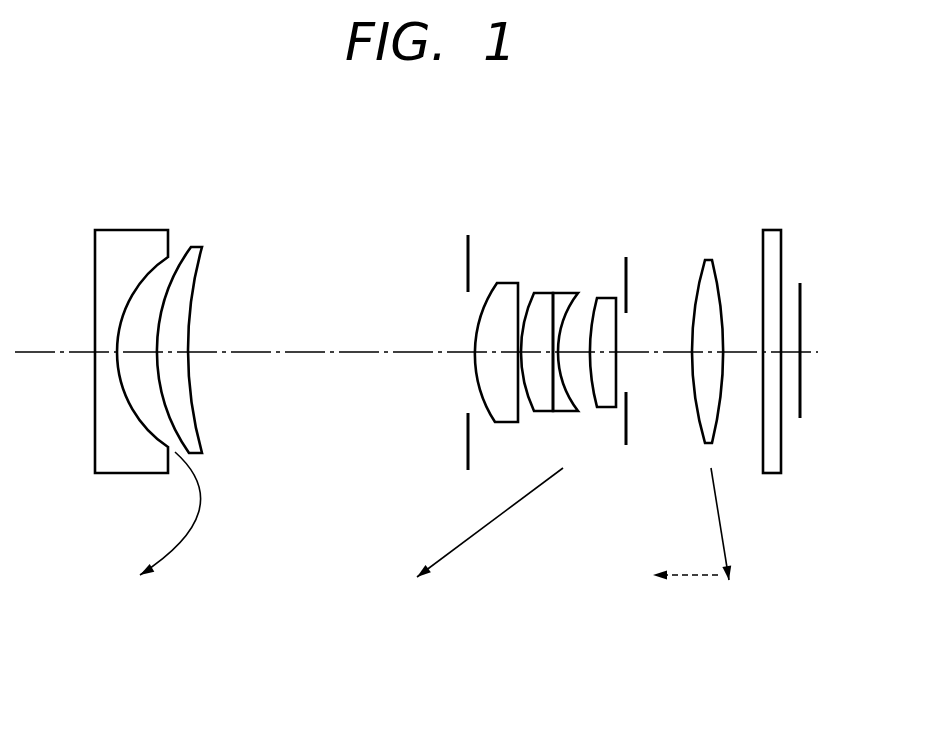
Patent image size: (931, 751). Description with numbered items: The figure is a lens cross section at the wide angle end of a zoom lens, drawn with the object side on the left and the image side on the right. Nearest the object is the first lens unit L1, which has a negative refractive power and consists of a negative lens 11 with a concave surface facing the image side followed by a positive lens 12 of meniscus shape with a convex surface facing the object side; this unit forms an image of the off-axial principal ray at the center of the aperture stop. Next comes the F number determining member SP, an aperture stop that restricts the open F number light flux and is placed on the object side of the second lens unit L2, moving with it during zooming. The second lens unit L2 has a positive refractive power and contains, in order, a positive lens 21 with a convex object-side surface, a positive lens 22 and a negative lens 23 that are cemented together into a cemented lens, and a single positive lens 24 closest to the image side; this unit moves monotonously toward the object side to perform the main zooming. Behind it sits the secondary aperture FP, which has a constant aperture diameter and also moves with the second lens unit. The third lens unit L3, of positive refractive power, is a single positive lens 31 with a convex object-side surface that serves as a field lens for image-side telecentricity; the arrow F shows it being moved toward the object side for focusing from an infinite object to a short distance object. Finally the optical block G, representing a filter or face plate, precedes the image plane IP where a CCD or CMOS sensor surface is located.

The first lens unit L1 is at (78, 167).
The negative lens 11 is at (135, 228).
The positive lens 12 is at (195, 247).
The F number determining member SP is at (465, 257).
The second lens unit L2 is at (635, 167).
The positive lens 21 is at (503, 283).
The positive lens 22 is at (542, 293).
The negative lens 23 is at (570, 293).
The positive lens 24 is at (610, 300).
The secondary aperture FP is at (628, 280).
The third lens unit L3 is at (687, 167).
The positive lens 31 is at (710, 260).
The optical block G is at (773, 230).
The image plane IP is at (802, 300).
The arrow F is at (690, 577).